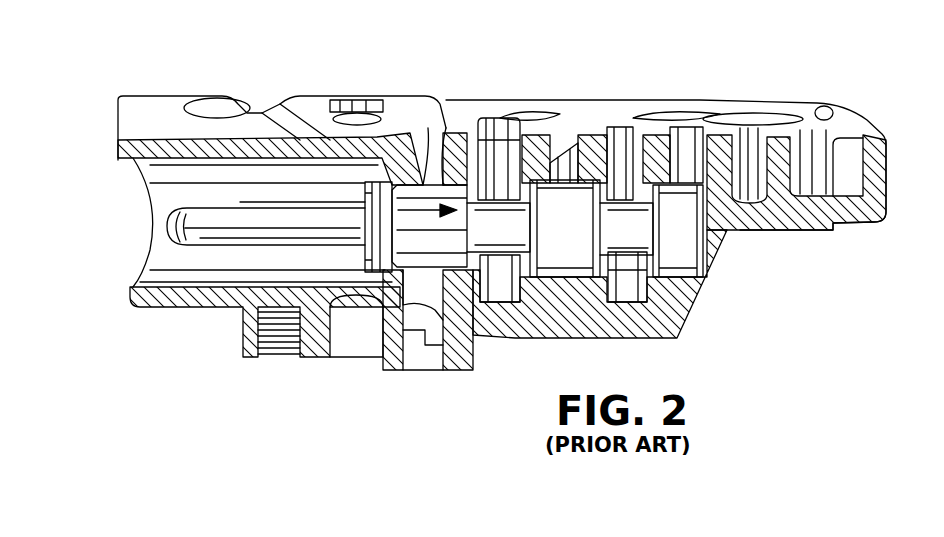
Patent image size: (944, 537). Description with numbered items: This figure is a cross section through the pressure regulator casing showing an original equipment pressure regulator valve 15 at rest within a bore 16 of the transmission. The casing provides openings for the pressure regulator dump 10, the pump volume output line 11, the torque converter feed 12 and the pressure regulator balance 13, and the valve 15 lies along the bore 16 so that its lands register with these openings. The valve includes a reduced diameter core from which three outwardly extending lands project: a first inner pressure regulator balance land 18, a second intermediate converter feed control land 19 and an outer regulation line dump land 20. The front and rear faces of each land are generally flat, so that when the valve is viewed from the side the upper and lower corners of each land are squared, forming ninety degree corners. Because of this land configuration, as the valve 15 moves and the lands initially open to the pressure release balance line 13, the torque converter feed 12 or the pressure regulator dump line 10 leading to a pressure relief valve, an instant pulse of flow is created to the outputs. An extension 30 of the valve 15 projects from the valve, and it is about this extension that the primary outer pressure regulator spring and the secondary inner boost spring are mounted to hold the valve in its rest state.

The pressure regulator dump 10 is at (440, 135).
The pump volume output line 11 is at (497, 135).
The torque converter feed 12 is at (567, 150).
The pressure regulator balance 13 is at (690, 140).
The pressure regulator valve 15 is at (205, 246).
The bore 16 is at (374, 190).
The first inner pressure regulator balance land 18 is at (680, 213).
The second intermediate converter feed control land 19 is at (575, 230).
The outer regulation line dump land 20 is at (433, 253).
The extension 30 is at (250, 220).